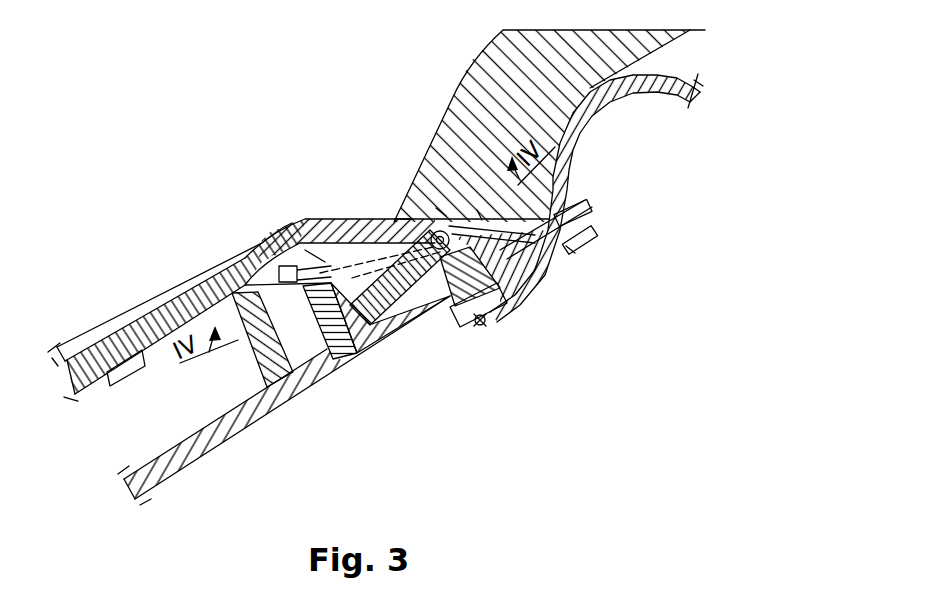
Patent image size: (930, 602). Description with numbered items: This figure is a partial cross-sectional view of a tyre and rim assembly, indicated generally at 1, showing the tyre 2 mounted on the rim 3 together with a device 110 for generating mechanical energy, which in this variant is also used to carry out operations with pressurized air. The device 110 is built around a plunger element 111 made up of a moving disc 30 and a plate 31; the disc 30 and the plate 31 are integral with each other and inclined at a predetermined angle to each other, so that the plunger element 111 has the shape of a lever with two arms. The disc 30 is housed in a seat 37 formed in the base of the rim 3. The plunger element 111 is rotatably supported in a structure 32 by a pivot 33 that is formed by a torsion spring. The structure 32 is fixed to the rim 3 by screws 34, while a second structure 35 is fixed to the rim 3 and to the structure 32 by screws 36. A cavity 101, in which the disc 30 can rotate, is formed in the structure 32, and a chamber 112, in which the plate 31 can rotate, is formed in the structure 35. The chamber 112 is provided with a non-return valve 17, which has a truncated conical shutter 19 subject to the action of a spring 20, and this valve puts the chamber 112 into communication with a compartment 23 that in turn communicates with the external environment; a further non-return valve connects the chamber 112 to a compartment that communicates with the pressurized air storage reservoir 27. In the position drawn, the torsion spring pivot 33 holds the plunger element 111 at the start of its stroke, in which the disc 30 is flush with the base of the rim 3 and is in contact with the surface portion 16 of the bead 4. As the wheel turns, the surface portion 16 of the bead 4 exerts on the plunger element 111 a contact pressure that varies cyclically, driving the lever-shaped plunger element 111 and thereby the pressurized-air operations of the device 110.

The vehicle body / outer shell 1 is at (708, 67).
The tyre 2 is at (672, 47).
The rim 3 is at (326, 210).
The bead 4 is at (470, 82).
The surface portion 16 is at (480, 207).
The non-return valve 17 is at (327, 277).
The truncated conical shutter 19 is at (320, 220).
The spring 20 is at (258, 250).
The compartment 23 is at (292, 262).
The pressurized air storage reservoir 27 is at (192, 405).
The moving disc 30 is at (445, 212).
The plate 31 is at (373, 214).
The structure 32 is at (582, 210).
The pivot 33 is at (400, 216).
The screws 34 is at (597, 232).
The structure 35 is at (377, 343).
The screws 36 is at (484, 328).
The seat 37 is at (585, 243).
The cavity 101 is at (547, 262).
The device for generating mechanical energy 110 is at (497, 208).
The plunger element 111 is at (442, 203).
The chamber 112 is at (383, 333).